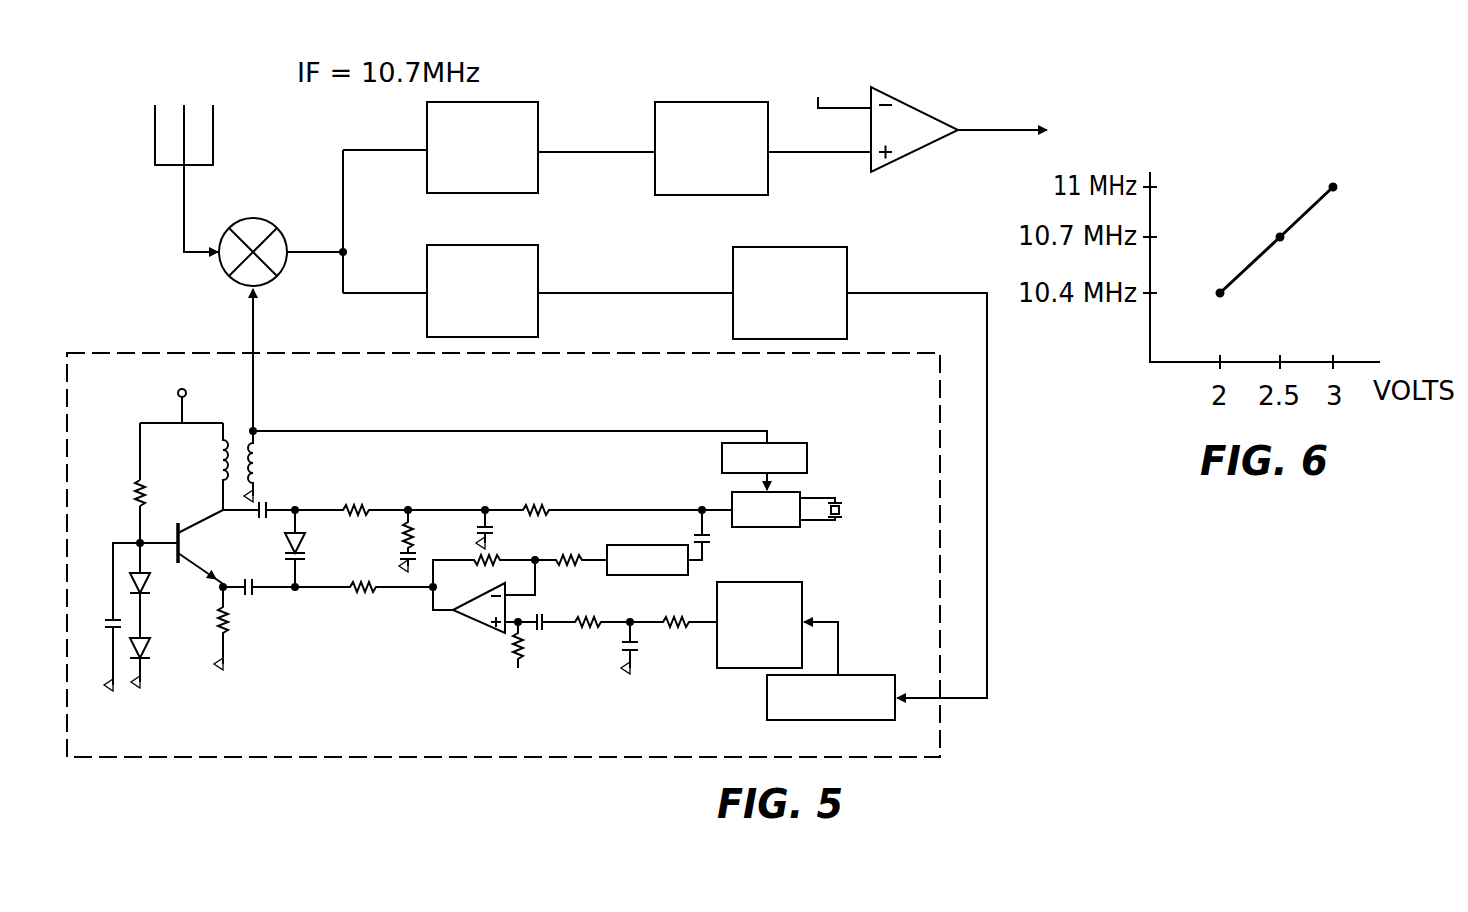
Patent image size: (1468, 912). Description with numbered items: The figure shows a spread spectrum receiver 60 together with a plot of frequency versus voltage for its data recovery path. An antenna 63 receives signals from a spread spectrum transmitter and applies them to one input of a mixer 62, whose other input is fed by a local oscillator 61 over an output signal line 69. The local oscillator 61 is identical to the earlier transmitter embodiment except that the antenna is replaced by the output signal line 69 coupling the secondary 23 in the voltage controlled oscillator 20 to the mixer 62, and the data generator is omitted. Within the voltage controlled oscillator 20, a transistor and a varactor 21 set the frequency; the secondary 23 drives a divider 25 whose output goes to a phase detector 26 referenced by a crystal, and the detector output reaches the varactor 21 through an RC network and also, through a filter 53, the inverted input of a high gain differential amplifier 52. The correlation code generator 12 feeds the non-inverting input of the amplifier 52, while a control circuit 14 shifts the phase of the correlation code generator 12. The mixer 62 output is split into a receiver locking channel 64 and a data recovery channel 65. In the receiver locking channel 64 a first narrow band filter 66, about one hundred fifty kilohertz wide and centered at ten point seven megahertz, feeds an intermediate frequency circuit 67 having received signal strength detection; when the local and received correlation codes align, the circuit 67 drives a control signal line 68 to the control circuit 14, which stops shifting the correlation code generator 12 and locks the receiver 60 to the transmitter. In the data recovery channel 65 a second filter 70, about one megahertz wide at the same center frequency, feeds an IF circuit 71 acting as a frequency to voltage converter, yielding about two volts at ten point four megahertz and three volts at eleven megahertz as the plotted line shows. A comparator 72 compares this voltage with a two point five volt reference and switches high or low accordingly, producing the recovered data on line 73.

The correlation code generator 12 is at (803, 603).
The control circuit 14 is at (862, 675).
The voltage controlled oscillator 20 is at (418, 523).
The varactor 21 is at (307, 539).
The secondary 23 is at (258, 466).
The divider 25 is at (720, 455).
The phase detector 26 is at (756, 527).
The high gain differential amplifier 52 is at (483, 628).
The filter 53 is at (645, 545).
The spread spectrum receiver 60 is at (1044, 526).
The local oscillator 61 is at (651, 351).
The mixer 62 is at (279, 226).
The antenna 63 is at (158, 178).
The receiver locking channel 64 is at (632, 303).
The data recovery channel 65 is at (603, 82).
The first narrow band filter 66 is at (495, 245).
The intermediate frequency circuit 67 is at (788, 245).
The control signal line 68 is at (988, 392).
The output signal line 69 is at (256, 362).
The second filter 70 is at (507, 102).
The IF circuit 71 is at (700, 102).
The voltage comparator 72 is at (917, 98).
The data output line 73 is at (1003, 135).